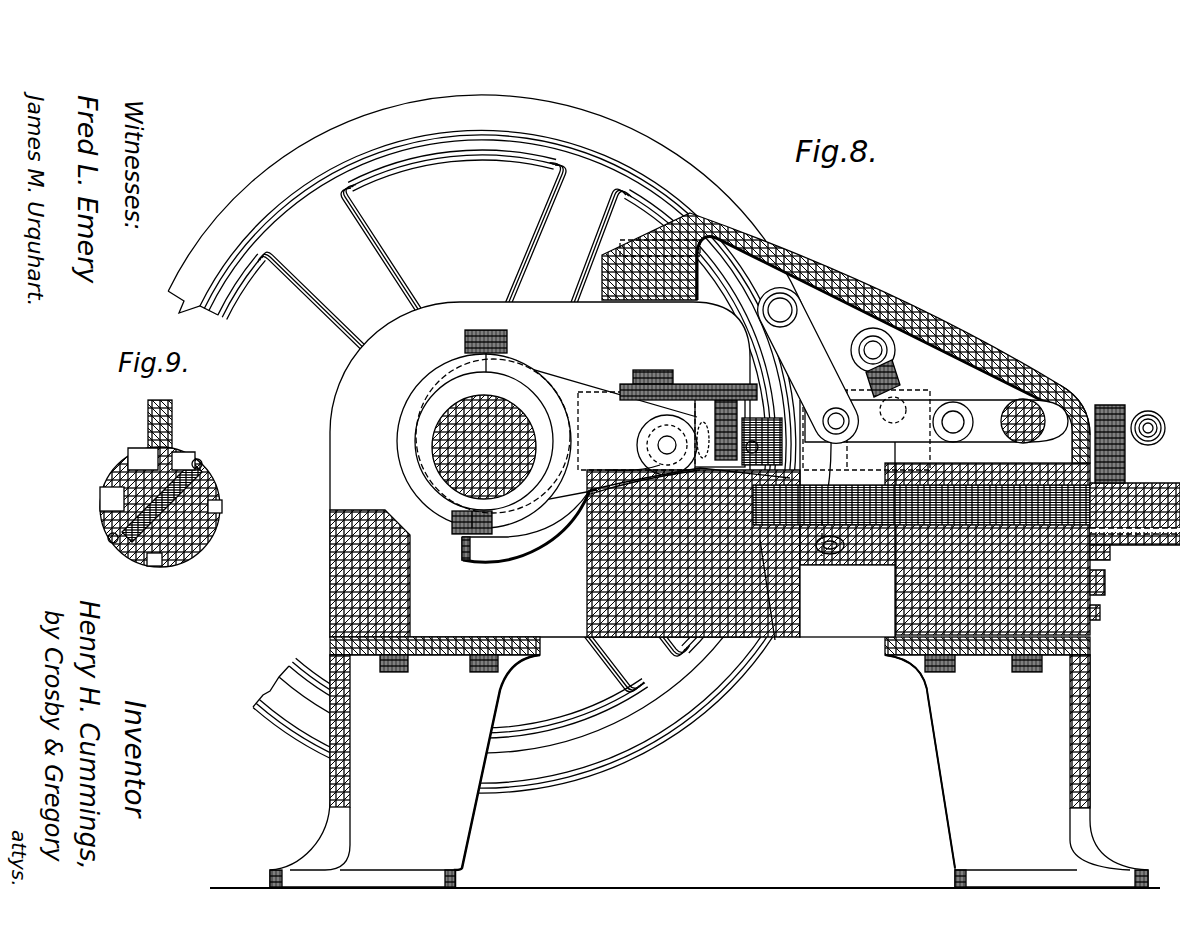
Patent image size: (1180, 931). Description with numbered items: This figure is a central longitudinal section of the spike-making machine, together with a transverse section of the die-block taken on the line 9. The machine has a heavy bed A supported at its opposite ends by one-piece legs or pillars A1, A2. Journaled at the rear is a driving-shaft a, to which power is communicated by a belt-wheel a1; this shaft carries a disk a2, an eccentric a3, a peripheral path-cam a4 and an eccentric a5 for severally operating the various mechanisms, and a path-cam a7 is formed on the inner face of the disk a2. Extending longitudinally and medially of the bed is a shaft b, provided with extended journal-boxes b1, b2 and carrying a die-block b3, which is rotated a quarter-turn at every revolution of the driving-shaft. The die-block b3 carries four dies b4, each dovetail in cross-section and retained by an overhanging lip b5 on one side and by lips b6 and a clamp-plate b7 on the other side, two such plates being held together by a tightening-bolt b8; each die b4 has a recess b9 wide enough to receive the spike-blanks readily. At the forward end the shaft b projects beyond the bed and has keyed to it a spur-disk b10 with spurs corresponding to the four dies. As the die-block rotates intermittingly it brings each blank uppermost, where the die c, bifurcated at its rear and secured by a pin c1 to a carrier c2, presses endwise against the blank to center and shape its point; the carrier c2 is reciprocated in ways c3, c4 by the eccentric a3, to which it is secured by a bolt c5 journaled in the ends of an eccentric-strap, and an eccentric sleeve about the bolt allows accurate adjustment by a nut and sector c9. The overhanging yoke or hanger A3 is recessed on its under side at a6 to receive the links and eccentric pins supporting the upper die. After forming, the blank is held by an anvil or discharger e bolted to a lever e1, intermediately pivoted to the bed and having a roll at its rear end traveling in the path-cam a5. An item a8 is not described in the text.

In FIG. 8, the bed A is at (760, 660).
In FIG. 8, the leg or pillar A1 is at (405, 771).
In FIG. 8, the leg or pillar A2 is at (1016, 771).
In FIG. 8, the overhanging yoke or hanger A3 is at (960, 327).
In FIG. 8, the driving-shaft a is at (450, 447).
In FIG. 9, the driving-shaft a is at (174, 424).
In FIG. 8, the belt-wheel a1 is at (480, 130).
In FIG. 8, the disk a2 is at (900, 403).
In FIG. 8, the eccentric a3 is at (812, 358).
In FIG. 8, the peripheral path-cam a4 is at (905, 396).
In FIG. 8, the eccentric a5 is at (792, 302).
In FIG. 8, the recess a6 is at (858, 300).
In FIG. 8, the path-cam a7 is at (1080, 397).
In FIG. 8, the pivot stud a8 is at (983, 406).
In FIG. 8, the shaft b is at (880, 570).
In FIG. 8, the journal-box b1 is at (905, 650).
In FIG. 8, the journal-box b2 is at (775, 640).
In FIG. 8, the die-block b3 is at (840, 552).
In FIG. 9, the die b4 is at (221, 516).
In FIG. 9, the overhanging lip b5 is at (180, 560).
In FIG. 9, the lip b6 is at (135, 555).
In FIG. 9, the clamp-plate b7 is at (128, 546).
In FIG. 9, the tightening-bolt b8 is at (205, 542).
In FIG. 9, the recess b9 is at (222, 506).
In FIG. 8, the spur-disk b10 is at (1145, 425).
In FIG. 8, the section line 9 is at (822, 565).
In FIG. 8, the die c is at (640, 433).
In FIG. 8, the pin c1 is at (750, 447).
In FIG. 8, the carrier c2 is at (640, 487).
In FIG. 8, the way c3 is at (735, 400).
In FIG. 8, the way c4 is at (650, 458).
In FIG. 8, the bolt c5 is at (660, 445).
In FIG. 8, the nut and sector c9 is at (703, 418).
In FIG. 8, the anvil or discharger e is at (652, 374).
In FIG. 8, the lever e1 is at (528, 547).